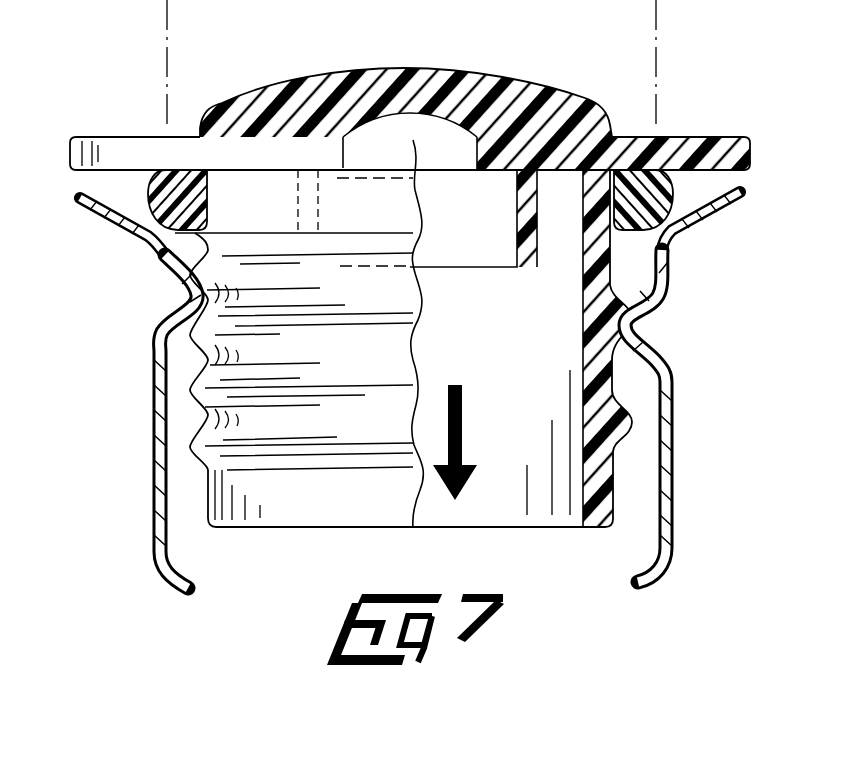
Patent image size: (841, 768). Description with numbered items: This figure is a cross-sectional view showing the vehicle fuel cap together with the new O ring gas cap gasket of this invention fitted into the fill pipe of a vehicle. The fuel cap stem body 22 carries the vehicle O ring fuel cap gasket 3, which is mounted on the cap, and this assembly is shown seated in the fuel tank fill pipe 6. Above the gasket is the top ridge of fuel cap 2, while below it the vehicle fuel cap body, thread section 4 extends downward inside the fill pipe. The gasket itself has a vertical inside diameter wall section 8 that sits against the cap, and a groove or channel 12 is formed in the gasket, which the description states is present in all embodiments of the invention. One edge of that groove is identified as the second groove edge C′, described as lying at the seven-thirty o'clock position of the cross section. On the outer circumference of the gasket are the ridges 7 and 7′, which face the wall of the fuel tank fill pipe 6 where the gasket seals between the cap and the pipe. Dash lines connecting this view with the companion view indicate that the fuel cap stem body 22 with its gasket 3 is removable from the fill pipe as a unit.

The top ridge of fuel cap 2 is at (496, 78).
The vehicle O ring fuel cap gasket 3 is at (697, 186).
The vehicle fuel cap body; thread section 4 is at (612, 397).
The fuel tank fill pipe 6 is at (675, 442).
The ridge on outer circumference of gasket 7 is at (673, 237).
The ridge on outer circumference of gasket 7′ is at (673, 242).
The vertical inside diameter wall section 8 is at (612, 187).
The groove or channel 12 is at (657, 180).
The fuel cap stem body 22 is at (335, 510).
The 7:30 o'clock position second groove edge C′ is at (610, 243).